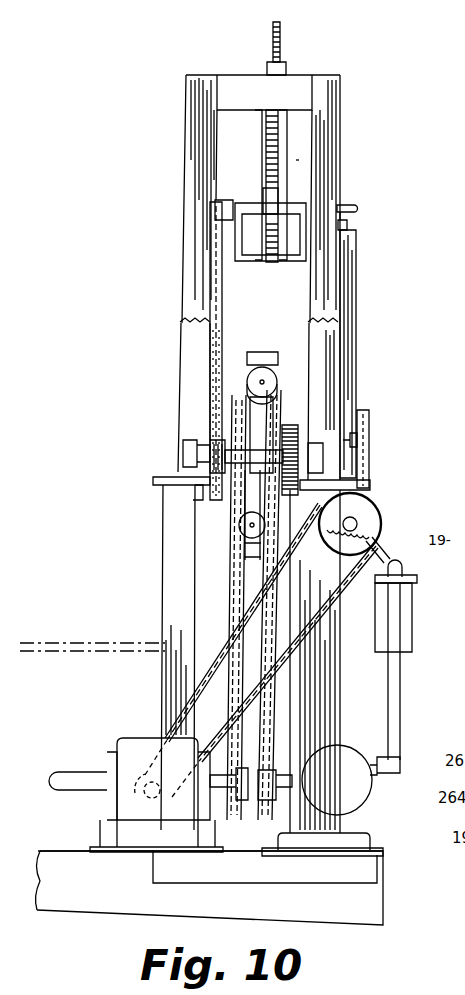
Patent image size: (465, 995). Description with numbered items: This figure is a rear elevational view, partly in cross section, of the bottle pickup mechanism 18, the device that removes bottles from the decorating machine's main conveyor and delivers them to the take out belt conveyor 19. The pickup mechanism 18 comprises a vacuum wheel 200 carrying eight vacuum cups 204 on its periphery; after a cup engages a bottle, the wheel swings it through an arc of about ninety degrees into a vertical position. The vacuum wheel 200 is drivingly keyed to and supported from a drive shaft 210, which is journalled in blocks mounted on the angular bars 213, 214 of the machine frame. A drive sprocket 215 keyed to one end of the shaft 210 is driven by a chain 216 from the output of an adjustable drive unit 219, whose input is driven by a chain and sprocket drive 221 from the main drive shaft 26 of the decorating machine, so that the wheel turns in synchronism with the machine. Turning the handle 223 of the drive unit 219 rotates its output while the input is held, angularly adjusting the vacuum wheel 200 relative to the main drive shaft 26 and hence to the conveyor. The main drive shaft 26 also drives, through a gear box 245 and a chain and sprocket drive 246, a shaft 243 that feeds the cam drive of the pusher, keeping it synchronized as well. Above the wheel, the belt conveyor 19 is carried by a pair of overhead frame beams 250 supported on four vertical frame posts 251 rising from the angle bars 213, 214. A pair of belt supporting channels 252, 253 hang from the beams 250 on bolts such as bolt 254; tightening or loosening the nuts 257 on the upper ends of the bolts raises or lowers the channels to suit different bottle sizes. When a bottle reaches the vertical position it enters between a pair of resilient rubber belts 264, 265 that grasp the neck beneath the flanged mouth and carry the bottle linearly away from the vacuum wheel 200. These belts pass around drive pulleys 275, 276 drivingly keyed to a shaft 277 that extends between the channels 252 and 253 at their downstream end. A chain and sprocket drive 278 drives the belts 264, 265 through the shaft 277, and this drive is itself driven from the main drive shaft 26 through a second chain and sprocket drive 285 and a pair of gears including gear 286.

The bottle pickup mechanism 18 is at (101, 141).
The take out belt conveyor 19 is at (305, 163).
The main drive shaft 26 is at (75, 780).
The vacuum wheel 200 is at (267, 343).
The vacuum cups 204 is at (279, 358).
The drive shaft 210 is at (358, 439).
The angular bar 213 is at (205, 481).
The angular bar 214 is at (370, 489).
The drive sprocket 215 is at (368, 424).
The chain 216 is at (368, 465).
The adjustable drive unit 219 is at (356, 295).
The chain and sprocket drive 221 is at (260, 805).
The handle 223 is at (357, 209).
The shaft 243 is at (357, 522).
The gear box 245 is at (130, 745).
The chain and sprocket drive 246 is at (372, 541).
The overhead frame beams 250 is at (195, 73).
The vertical frame posts 251 is at (335, 106).
The belt supporting channel 252 is at (305, 207).
The belt supporting channel 253 is at (230, 199).
The bolt 254 is at (283, 46).
The nuts 257 is at (268, 62).
The resilient rubber belt 264 is at (289, 140).
The resilient rubber belt 265 is at (255, 139).
The drive pulley 275 is at (272, 240).
The drive pulley 276 is at (270, 209).
The shaft 277 is at (213, 232).
The chain and sprocket drive 278 is at (209, 370).
The second chain and sprocket drive 285 is at (230, 608).
The gear 286 is at (296, 430).